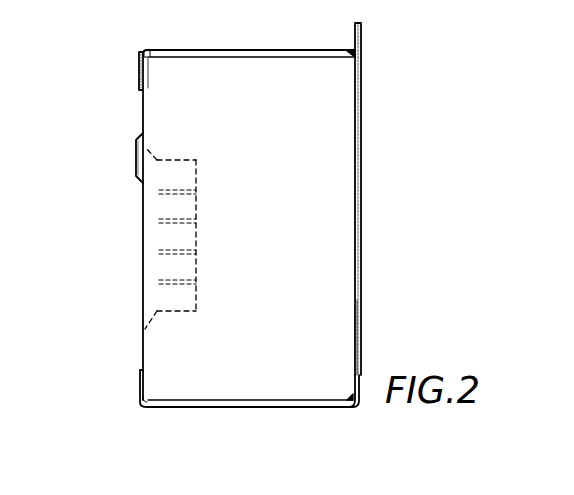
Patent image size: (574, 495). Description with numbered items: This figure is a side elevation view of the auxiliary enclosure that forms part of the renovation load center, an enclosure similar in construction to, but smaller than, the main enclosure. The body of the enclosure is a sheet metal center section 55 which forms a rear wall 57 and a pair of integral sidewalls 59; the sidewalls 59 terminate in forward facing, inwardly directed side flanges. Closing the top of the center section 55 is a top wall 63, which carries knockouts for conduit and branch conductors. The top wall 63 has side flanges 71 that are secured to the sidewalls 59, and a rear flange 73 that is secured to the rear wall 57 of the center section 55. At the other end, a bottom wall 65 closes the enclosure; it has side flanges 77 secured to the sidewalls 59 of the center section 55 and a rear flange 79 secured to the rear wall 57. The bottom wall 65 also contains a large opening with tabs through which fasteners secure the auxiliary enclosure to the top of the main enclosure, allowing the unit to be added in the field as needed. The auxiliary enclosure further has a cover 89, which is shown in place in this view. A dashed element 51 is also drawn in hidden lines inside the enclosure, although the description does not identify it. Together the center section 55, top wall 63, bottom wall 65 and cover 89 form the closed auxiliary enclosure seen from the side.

The center section 55 is at (122, 345).
The top wall 63 is at (232, 50).
The side flanges 71 is at (306, 58).
The rear flange 73 is at (139, 74).
The cover 89 is at (361, 184).
The sidewalls 59 is at (343, 338).
The side flanges 77 is at (322, 406).
The bottom wall 65 is at (238, 408).
The rear flange 79 is at (139, 380).
The rear wall 57 is at (143, 292).
The hidden component (dashed) 51 is at (181, 157).